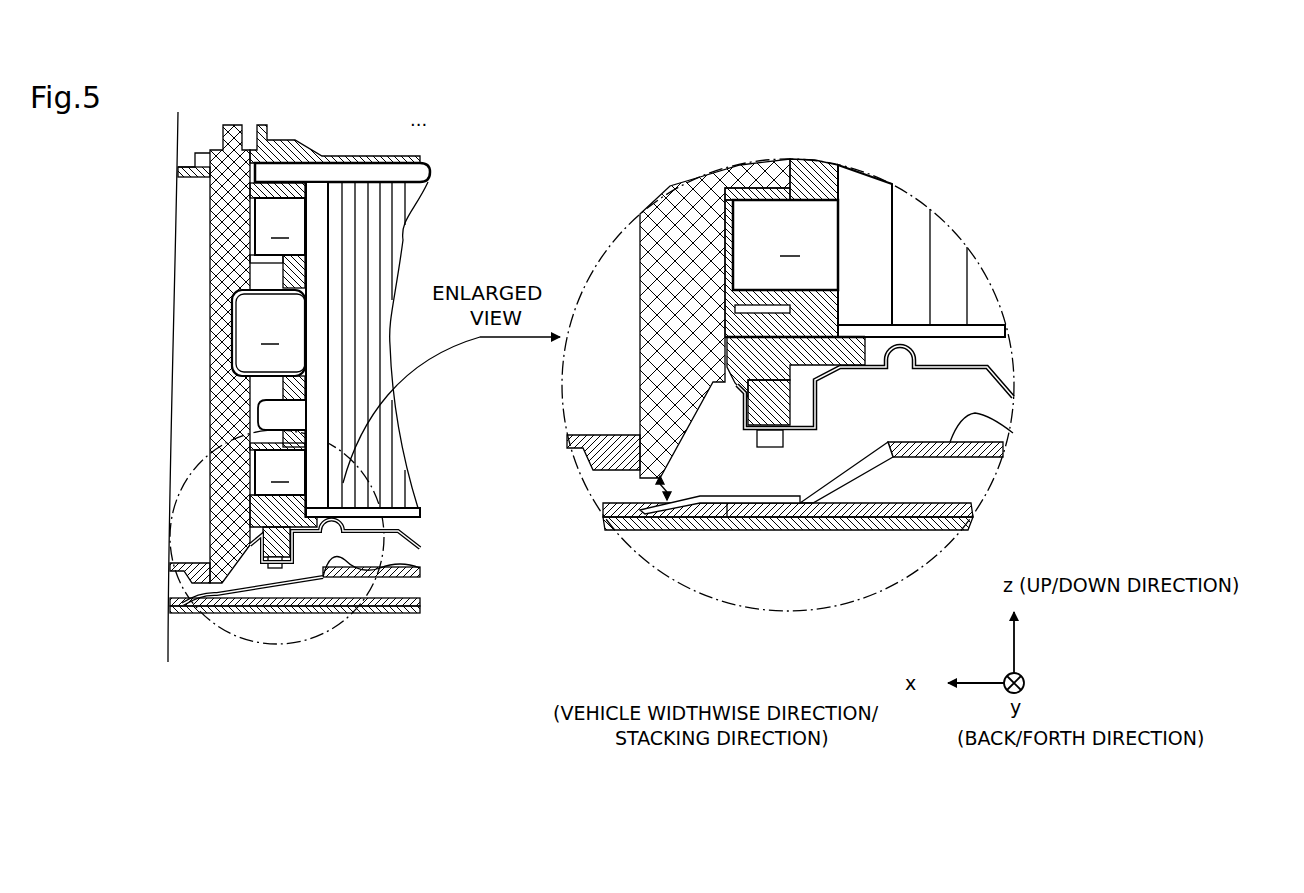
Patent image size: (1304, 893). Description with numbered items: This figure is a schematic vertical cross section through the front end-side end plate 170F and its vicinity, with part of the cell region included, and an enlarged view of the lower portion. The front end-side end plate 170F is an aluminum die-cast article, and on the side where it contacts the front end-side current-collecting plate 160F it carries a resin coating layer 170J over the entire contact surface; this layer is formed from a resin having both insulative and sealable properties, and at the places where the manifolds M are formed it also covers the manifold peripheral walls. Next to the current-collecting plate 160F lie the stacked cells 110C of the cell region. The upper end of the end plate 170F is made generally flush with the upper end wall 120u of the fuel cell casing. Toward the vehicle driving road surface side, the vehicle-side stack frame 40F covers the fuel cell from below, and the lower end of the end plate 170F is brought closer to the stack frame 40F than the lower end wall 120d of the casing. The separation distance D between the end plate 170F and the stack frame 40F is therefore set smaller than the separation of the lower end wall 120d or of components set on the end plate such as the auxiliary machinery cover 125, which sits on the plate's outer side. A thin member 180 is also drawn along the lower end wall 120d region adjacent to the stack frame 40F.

The upper end wall 120u is at (287, 150).
The front end-side current-collecting plate 160F is at (317, 197).
The battery cells 110C is at (333, 203).
The resin coating layer 170J is at (290, 290).
The manifold M is at (273, 417).
The front end-side end plate 170F is at (212, 517).
The auxiliary machinery cover 125 is at (190, 570).
The sheet member 180 is at (397, 531).
The lower end wall 120d is at (347, 537).
The vehicle-side stack frame 40F is at (330, 578).
The separation distance D is at (613, 533).